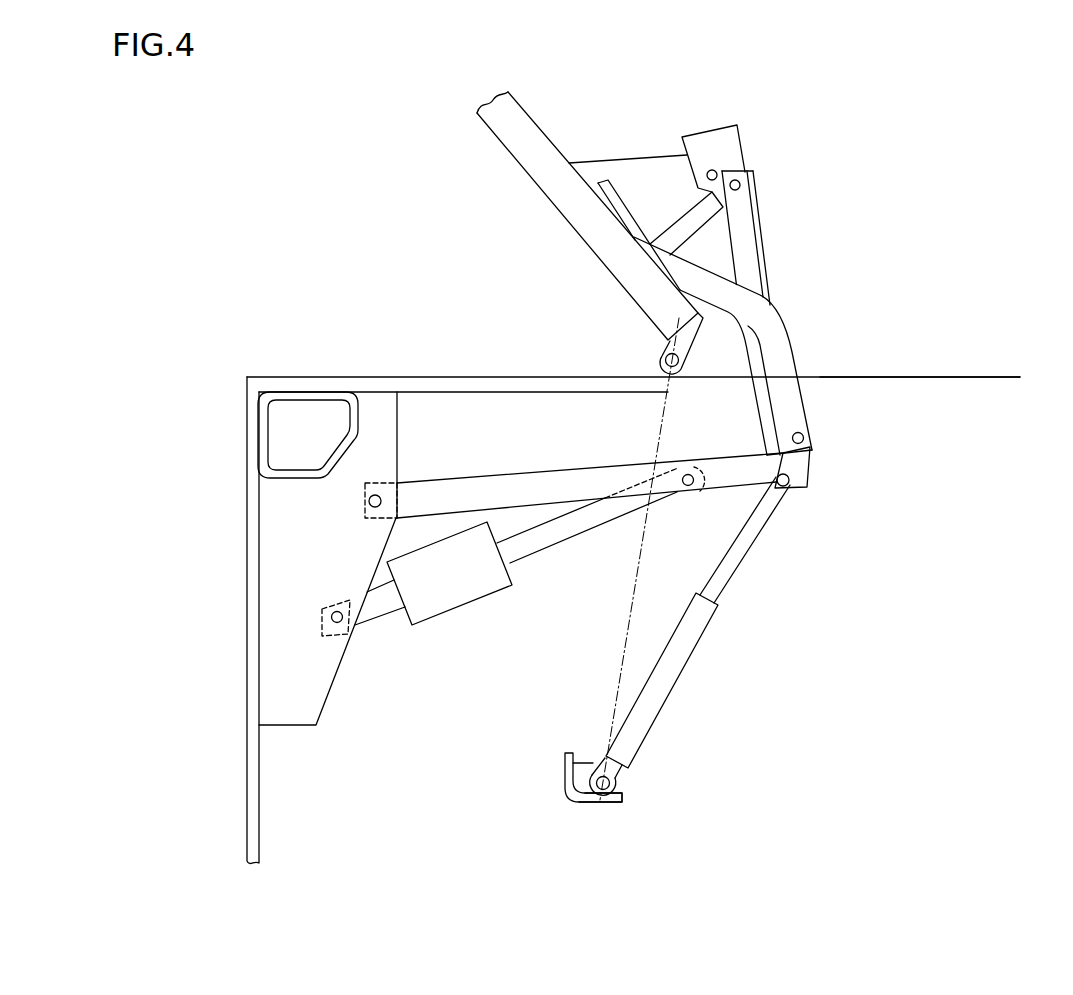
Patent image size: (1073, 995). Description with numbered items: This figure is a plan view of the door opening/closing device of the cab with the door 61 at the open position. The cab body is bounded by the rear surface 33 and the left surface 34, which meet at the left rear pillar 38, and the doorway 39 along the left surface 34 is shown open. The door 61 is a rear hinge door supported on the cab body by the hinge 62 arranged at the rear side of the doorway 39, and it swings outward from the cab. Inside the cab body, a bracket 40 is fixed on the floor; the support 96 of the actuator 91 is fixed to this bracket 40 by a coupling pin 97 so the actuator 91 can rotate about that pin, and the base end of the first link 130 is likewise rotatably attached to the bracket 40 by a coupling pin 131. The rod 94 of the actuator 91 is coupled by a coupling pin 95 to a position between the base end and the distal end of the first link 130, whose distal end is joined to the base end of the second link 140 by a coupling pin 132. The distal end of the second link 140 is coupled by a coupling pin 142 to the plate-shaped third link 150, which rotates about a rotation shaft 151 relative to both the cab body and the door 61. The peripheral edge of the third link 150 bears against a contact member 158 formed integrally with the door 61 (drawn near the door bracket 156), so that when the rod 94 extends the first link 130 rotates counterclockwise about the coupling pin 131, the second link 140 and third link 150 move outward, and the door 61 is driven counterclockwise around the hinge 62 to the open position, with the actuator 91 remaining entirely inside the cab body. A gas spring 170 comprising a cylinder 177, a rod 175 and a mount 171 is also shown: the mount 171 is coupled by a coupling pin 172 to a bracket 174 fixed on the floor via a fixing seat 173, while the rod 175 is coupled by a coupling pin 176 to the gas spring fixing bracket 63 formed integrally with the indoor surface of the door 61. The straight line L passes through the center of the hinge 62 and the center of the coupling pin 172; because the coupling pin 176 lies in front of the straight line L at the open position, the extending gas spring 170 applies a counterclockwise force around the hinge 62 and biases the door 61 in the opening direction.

The rear surface 33 is at (248, 577).
The left surface 34 is at (433, 390).
The left rear pillar 38 is at (283, 391).
The doorway 39 is at (957, 376).
The bracket 40 is at (327, 542).
The door 61 is at (583, 210).
The hinge 62 is at (665, 358).
The gas spring fixing bracket 63 is at (781, 350).
The actuator 91 is at (461, 600).
The rod 94 is at (571, 541).
The coupling pin 95 is at (689, 492).
The support 96 is at (374, 613).
The coupling pin 97 is at (328, 617).
The first link 130 is at (503, 478).
The coupling pin 131 is at (368, 501).
The coupling pin 132 is at (797, 481).
The second link 140 is at (757, 280).
The coupling pin 142 is at (742, 186).
The third link 150 is at (714, 150).
The rotation shaft 151 is at (718, 173).
The bracket 156 is at (597, 178).
The contact member 158 is at (662, 262).
The gas spring 170 is at (690, 680).
The mount 171 is at (705, 671).
The coupling pin 172 is at (604, 795).
The fixing seat 173 is at (564, 805).
The bracket 174 is at (566, 778).
The rod 175 is at (750, 545).
The coupling pin 176 is at (806, 440).
The cylinder 177 is at (657, 692).
The straight line L is at (660, 410).